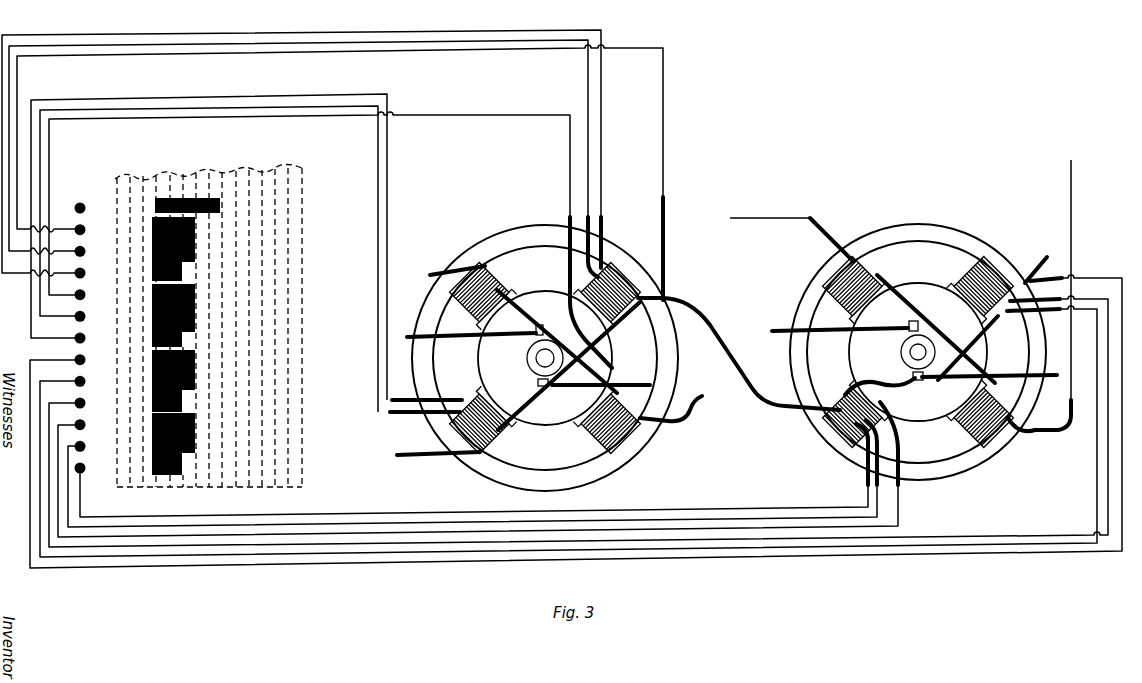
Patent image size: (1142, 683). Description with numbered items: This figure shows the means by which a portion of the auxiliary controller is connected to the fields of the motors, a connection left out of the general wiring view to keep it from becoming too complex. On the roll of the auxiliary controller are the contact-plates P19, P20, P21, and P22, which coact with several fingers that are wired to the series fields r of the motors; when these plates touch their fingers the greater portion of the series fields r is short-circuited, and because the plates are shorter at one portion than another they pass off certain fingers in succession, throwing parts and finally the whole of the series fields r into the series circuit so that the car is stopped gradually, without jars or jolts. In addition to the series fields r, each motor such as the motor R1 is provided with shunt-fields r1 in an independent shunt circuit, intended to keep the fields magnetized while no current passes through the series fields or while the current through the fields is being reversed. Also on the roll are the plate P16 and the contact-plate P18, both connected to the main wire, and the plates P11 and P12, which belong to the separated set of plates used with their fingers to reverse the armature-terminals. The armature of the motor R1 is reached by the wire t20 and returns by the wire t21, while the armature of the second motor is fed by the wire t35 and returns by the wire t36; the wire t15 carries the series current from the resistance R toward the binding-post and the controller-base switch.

The contact plate P11 is at (75, 339).
The contact plate P12 is at (82, 197).
The wire t15 is at (332, 172).
The contact plate P16 is at (375, 522).
The contact plate P18 is at (165, 200).
The contact plate P19 is at (152, 245).
The contact plate P20 is at (152, 308).
The contact plate P21 is at (152, 373).
The contact plate P22 is at (152, 448).
The wire t20 is at (475, 347).
The wire t21 is at (633, 383).
The series fields r is at (490, 437).
The shunt-fields r1 is at (632, 402).
The resistance R is at (652, 446).
The wire t35 is at (783, 323).
The wire t36 is at (1009, 376).
The motor R1 is at (1035, 405).